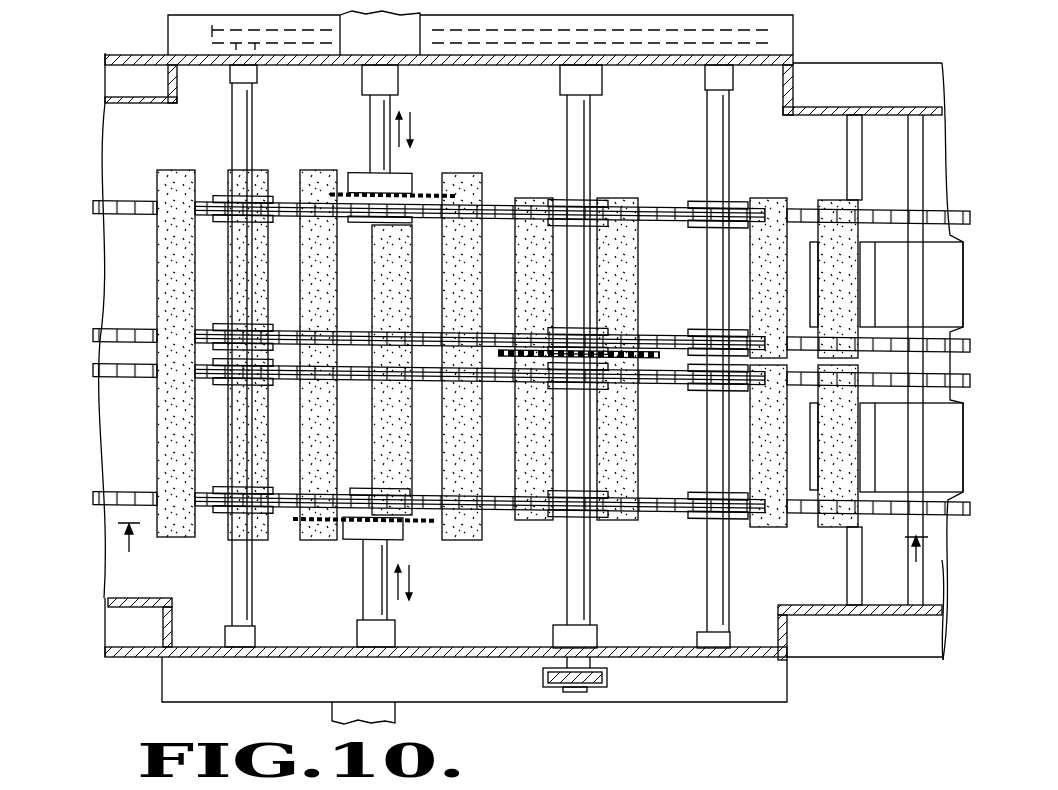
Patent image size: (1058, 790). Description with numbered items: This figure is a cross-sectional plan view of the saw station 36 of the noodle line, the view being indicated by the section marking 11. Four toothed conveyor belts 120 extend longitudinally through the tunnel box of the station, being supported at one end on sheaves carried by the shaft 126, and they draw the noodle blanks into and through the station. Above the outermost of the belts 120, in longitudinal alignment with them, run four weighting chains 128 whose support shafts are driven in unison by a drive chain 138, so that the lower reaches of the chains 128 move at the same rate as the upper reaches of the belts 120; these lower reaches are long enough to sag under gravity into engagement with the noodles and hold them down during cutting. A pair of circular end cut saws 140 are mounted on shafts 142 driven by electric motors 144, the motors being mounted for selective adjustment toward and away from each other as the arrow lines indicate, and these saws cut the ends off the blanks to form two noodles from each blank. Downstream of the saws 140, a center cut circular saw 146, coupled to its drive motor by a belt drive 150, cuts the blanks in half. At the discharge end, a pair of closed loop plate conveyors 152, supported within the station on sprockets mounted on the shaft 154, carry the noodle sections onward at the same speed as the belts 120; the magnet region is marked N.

The saw station 36 is at (770, 721).
The electric motors 144 is at (357, 45).
The drive chain 138 is at (515, 45).
The shafts 142 is at (372, 131).
The circular end cut saws 140 is at (435, 190).
The weighting chains 128 is at (500, 206).
The toothed conveyor belts 120 is at (95, 213).
The closed loop plate conveyors 152 is at (887, 241).
The center cut circular saw 146 is at (651, 362).
The belt drive 150 is at (605, 688).
The shaft 154 is at (850, 576).
The shaft 126 is at (935, 656).
The section line 11 is at (526, 562).
The magnet north pole N is at (378, 432).